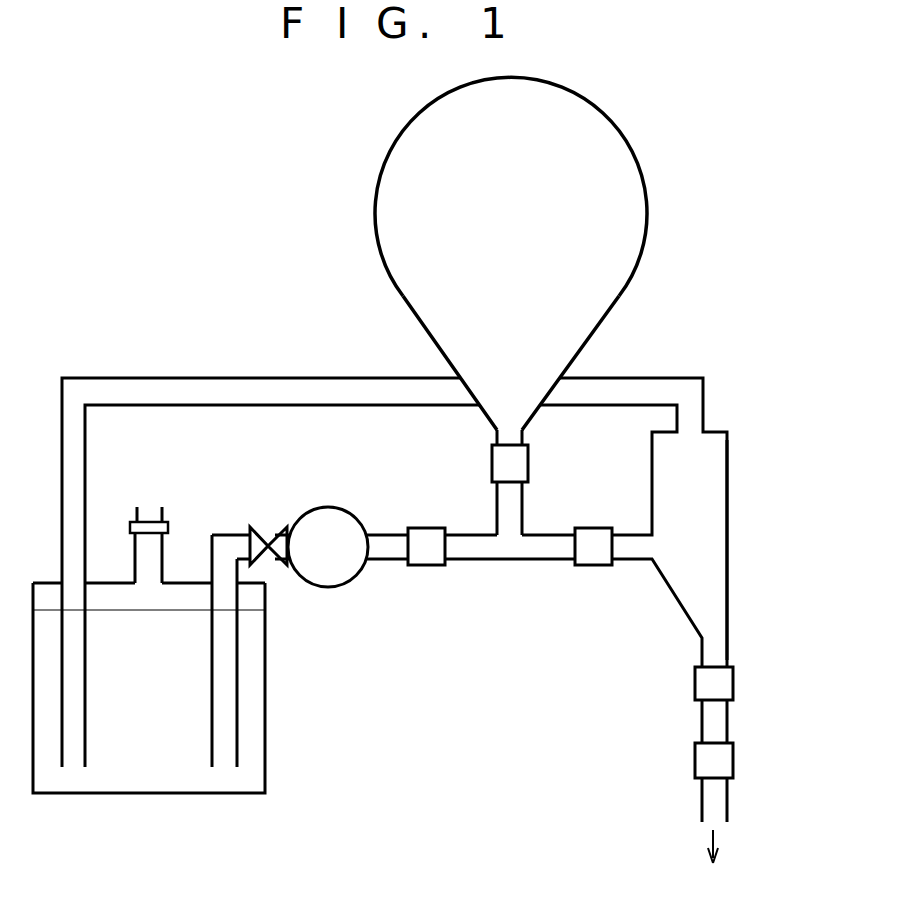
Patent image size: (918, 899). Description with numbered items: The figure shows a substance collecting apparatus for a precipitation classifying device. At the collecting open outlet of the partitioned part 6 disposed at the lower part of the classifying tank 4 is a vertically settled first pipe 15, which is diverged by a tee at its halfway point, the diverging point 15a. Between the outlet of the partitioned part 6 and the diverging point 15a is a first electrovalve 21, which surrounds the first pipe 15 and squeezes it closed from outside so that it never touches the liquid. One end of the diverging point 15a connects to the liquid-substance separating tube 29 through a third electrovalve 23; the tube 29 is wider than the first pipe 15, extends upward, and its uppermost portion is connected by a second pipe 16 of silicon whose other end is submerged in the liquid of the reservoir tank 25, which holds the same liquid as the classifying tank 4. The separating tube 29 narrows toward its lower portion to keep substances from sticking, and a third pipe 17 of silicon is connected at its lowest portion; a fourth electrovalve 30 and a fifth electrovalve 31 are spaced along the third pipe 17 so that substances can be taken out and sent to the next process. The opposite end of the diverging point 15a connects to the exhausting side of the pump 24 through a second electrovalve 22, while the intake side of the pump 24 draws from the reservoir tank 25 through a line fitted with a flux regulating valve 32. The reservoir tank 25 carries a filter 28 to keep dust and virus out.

The classifying tank 4 is at (630, 170).
The partitioned part 6 is at (573, 355).
The first pipe 15 is at (503, 503).
The diverging point 15a is at (510, 548).
The second pipe 16 is at (268, 388).
The third pipe 17 is at (730, 649).
The first electrovalve 21 is at (528, 461).
The second electrovalve 22 is at (420, 553).
The third electrovalve 23 is at (588, 548).
The pump 24 is at (342, 522).
The reservoir tank 25 is at (257, 728).
The filter 28 is at (128, 525).
The liquid-substance separating tube 29 is at (720, 470).
The fourth electrovalve 30 is at (733, 686).
The fifth electrovalve 31 is at (733, 770).
The flux regulating valve 32 is at (260, 532).